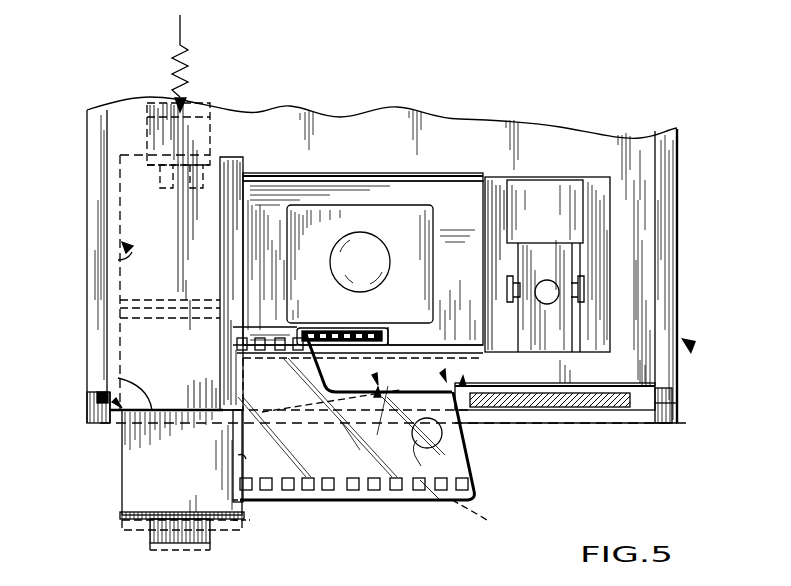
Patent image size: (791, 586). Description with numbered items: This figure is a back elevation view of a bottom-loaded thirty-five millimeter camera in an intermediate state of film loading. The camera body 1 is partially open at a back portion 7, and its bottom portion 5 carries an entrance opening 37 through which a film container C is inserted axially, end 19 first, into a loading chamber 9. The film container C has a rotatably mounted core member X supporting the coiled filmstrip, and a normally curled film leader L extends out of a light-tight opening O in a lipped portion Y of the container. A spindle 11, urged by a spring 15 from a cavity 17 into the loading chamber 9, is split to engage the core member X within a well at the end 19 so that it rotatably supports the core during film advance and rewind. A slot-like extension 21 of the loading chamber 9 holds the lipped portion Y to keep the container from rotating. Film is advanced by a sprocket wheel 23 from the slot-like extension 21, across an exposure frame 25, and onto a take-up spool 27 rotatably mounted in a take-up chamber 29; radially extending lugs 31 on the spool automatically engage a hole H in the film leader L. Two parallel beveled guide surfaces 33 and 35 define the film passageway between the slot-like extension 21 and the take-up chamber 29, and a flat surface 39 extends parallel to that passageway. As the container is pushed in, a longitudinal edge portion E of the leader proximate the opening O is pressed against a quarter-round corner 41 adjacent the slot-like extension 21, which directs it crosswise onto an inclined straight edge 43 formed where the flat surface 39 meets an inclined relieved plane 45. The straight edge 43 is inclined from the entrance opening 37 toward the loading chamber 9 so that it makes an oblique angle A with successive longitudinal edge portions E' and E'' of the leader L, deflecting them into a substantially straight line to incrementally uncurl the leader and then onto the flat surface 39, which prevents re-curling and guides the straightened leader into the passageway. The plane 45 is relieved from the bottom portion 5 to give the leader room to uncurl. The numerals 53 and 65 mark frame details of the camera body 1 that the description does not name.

The camera body 1 is at (690, 346).
The bottom portion 5 is at (463, 419).
The back portion 7 is at (474, 147).
The loading chamber 9 is at (118, 262).
The spindle 11 is at (148, 178).
The spring 15 is at (170, 52).
The cavity 17 is at (195, 94).
The end of the film container 19 is at (177, 300).
The slot-like extension 21 is at (229, 159).
The sprocket wheel 23 is at (346, 333).
The exposure frame 25 is at (406, 213).
The take-up spool 27 is at (544, 298).
The take-up chamber 29 is at (598, 202).
The lugs 31 is at (582, 290).
The beveled guide surface 33 is at (406, 354).
The beveled guide surface 35 is at (429, 188).
The entrance opening 37 is at (106, 401).
The flat surface 39 is at (358, 340).
The quarter-round corner 41 is at (260, 412).
The straight edge 43 is at (432, 358).
The inclined relieved plane 45 is at (342, 428).
The frame side wall 53 is at (85, 210).
The support lip 65 is at (100, 406).
The longitudinal edge portion E is at (265, 310).
The longitudinal edge portion E' is at (355, 377).
The longitudinal edge portion E'' is at (456, 368).
The oblique angle A is at (386, 392).
The film container C is at (126, 479).
The light-tight opening O is at (240, 457).
The core member X is at (146, 526).
The lipped portion Y is at (248, 522).
The hole H is at (440, 436).
The film leader L is at (430, 520).